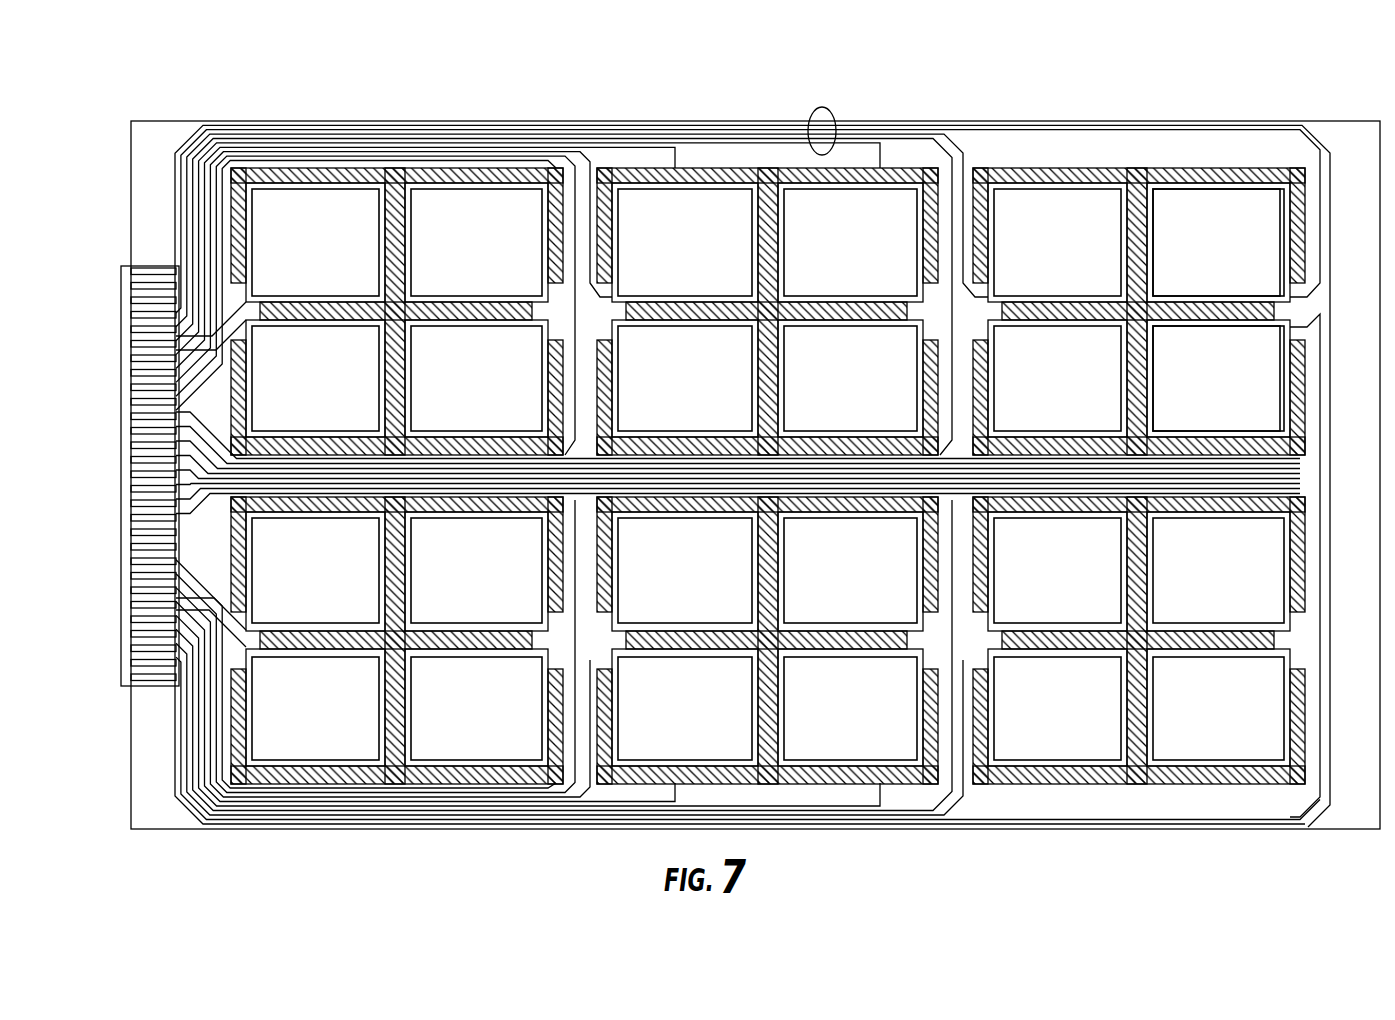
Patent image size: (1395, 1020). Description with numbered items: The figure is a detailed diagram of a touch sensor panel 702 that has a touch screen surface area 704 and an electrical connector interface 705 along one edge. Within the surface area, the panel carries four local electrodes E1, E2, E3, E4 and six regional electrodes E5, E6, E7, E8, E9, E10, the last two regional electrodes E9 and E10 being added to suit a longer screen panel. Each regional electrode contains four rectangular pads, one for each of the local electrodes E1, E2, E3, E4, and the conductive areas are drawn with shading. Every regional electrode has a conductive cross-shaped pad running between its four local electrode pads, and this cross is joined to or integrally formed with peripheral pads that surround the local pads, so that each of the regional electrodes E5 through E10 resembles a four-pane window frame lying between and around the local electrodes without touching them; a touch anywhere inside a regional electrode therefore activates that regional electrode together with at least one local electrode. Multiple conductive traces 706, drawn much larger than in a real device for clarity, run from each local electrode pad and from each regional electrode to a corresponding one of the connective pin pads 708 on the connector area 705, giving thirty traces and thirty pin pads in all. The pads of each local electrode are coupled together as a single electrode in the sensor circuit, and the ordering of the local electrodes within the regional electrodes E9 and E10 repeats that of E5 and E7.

The touch sensor panel 702 is at (182, 118).
The touch screen surface area 704 is at (1303, 412).
The electrical connector interface 705 is at (120, 388).
The conductive traces 706 is at (820, 108).
The connective pin pads 708 is at (157, 246).
The local electrode E1 is at (328, 261).
The local electrode E2 is at (697, 261).
The local electrode E3 is at (480, 261).
The local electrode E4 is at (857, 261).
The regional electrode E5 is at (402, 190).
The regional electrode E6 is at (397, 770).
The regional electrode E7 is at (770, 190).
The regional electrode E8 is at (815, 787).
The regional electrode E9 is at (1140, 185).
The regional electrode E10 is at (1105, 786).